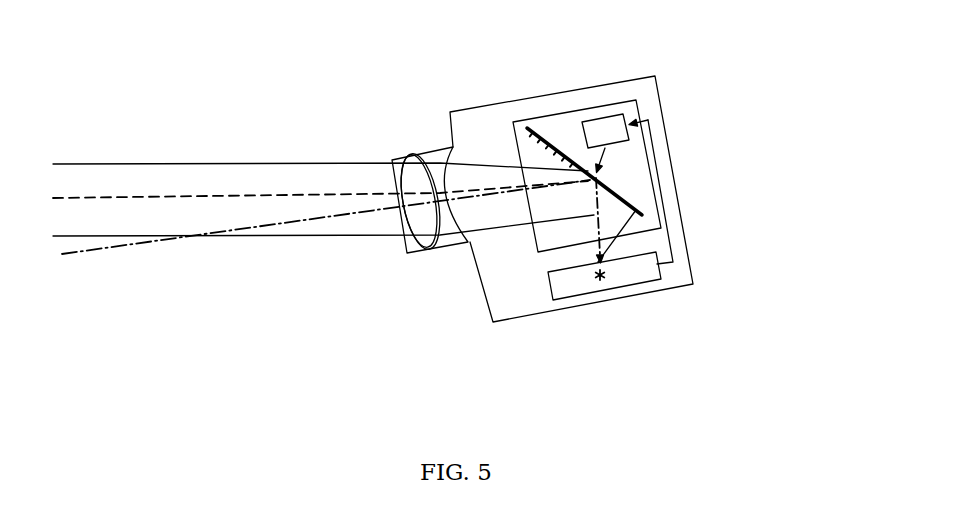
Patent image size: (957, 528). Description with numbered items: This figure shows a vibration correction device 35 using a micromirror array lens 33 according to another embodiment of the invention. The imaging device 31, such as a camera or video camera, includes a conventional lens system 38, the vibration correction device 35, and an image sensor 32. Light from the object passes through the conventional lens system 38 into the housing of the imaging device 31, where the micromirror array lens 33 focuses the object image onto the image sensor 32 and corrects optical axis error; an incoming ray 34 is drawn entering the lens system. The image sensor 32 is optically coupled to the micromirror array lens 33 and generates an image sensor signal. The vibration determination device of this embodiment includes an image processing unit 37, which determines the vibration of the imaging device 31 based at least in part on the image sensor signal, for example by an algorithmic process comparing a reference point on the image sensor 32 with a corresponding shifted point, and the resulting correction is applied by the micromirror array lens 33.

The imaging device 31 is at (475, 133).
The image sensor 32 is at (652, 270).
The micromirror array lens 33 is at (636, 210).
The incident light ray 34 is at (233, 236).
The vibration correction device 35 is at (638, 102).
The image processing unit 37 is at (603, 115).
The conventional lens system 38 is at (434, 252).